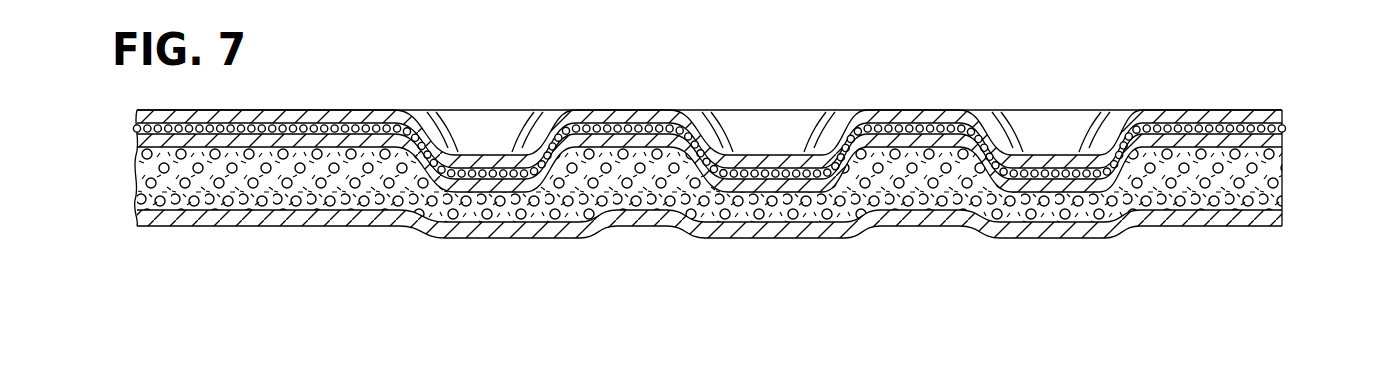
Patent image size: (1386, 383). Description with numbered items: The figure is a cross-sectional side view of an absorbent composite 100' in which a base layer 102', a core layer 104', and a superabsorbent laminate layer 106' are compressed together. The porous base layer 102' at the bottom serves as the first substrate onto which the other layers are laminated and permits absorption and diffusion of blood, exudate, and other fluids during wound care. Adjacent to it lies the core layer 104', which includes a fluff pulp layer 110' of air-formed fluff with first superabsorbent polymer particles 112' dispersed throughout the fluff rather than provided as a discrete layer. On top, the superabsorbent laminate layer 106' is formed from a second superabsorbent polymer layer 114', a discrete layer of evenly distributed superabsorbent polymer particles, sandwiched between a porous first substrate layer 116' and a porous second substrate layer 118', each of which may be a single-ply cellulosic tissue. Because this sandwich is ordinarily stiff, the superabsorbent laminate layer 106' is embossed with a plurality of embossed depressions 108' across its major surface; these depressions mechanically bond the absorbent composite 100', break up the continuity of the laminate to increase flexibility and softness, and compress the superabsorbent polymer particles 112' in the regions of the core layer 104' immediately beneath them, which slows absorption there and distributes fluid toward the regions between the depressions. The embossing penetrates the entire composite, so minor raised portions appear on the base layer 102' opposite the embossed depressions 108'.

The absorbent composite 100' is at (748, 162).
The base layer 102' is at (709, 244).
The core layer 104' is at (749, 222).
The superabsorbent laminate layer 106' is at (741, 117).
The embossed depressions 108' is at (781, 107).
The fluff pulp layer 110' is at (709, 213).
The first superabsorbent polymer particles 112' is at (709, 222).
The second superabsorbent polymer layer 114' is at (709, 111).
The first substrate layer 116' is at (709, 118).
The second substrate layer 118' is at (709, 105).